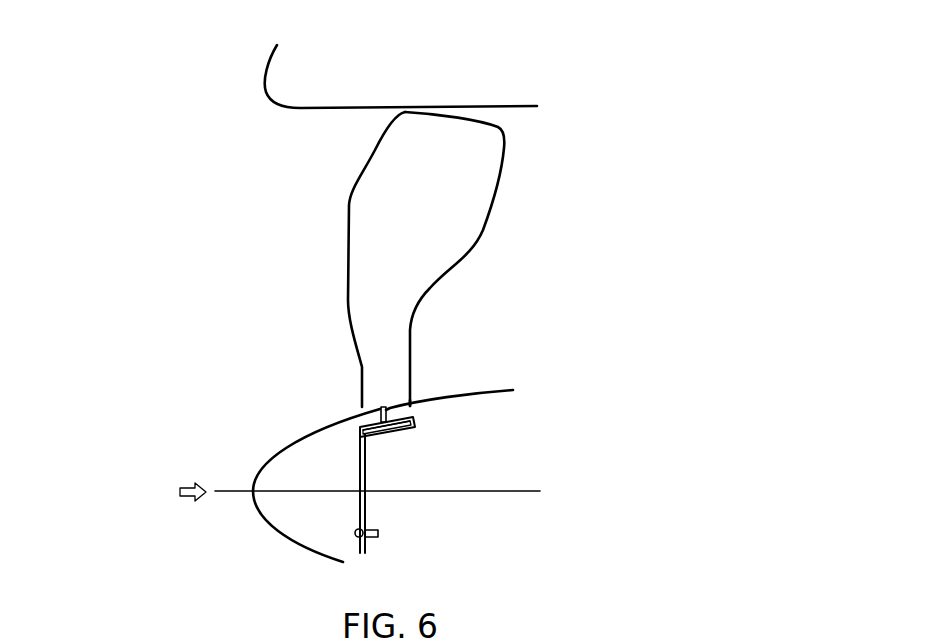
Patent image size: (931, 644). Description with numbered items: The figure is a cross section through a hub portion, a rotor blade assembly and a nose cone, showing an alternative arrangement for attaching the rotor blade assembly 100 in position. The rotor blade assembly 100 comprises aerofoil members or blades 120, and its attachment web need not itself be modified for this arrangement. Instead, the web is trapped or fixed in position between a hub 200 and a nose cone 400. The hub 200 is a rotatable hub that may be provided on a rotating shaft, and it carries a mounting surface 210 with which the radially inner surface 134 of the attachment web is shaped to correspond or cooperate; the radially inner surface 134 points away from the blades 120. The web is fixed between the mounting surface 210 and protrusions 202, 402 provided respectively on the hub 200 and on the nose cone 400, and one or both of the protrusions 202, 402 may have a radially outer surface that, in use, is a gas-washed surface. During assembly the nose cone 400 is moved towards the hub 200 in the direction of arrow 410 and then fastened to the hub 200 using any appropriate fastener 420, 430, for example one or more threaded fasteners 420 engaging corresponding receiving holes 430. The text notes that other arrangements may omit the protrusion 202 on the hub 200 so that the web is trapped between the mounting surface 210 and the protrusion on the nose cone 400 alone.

The rotor blade assembly 100 is at (302, 209).
The blade 120 is at (463, 215).
The radially inner surface 134 is at (373, 436).
The hub 200 is at (565, 453).
The protrusion 202 is at (400, 405).
The mounting surface 210 is at (404, 434).
The nose cone 400 is at (332, 483).
The protrusion 402 is at (377, 410).
The arrow 410 is at (180, 492).
The threaded fastener 420 is at (356, 532).
The receiving hole 430 is at (378, 532).